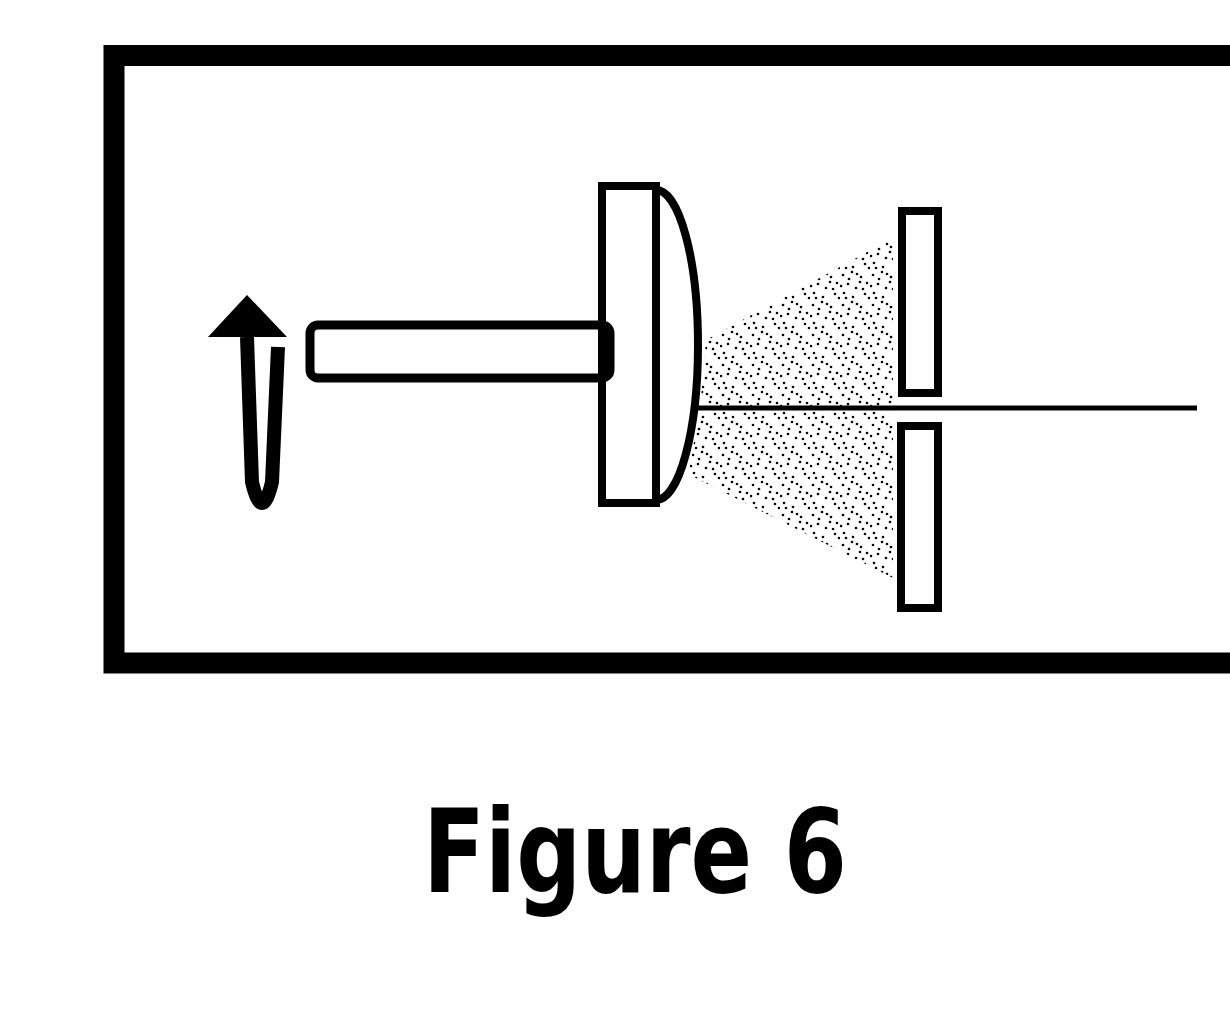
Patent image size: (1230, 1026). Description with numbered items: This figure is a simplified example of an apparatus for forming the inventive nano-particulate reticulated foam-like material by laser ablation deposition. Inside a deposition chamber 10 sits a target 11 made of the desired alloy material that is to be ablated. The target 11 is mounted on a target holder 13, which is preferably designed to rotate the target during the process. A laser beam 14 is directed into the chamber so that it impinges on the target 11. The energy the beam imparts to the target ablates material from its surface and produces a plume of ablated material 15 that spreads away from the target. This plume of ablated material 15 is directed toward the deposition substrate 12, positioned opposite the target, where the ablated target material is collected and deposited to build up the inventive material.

The deposition chamber 10 is at (672, 360).
The target 11 is at (677, 270).
The deposition substrate 12 is at (930, 285).
The target holder 13 is at (624, 257).
The laser beam 14 is at (1126, 432).
The plume of ablated material 15 is at (768, 519).